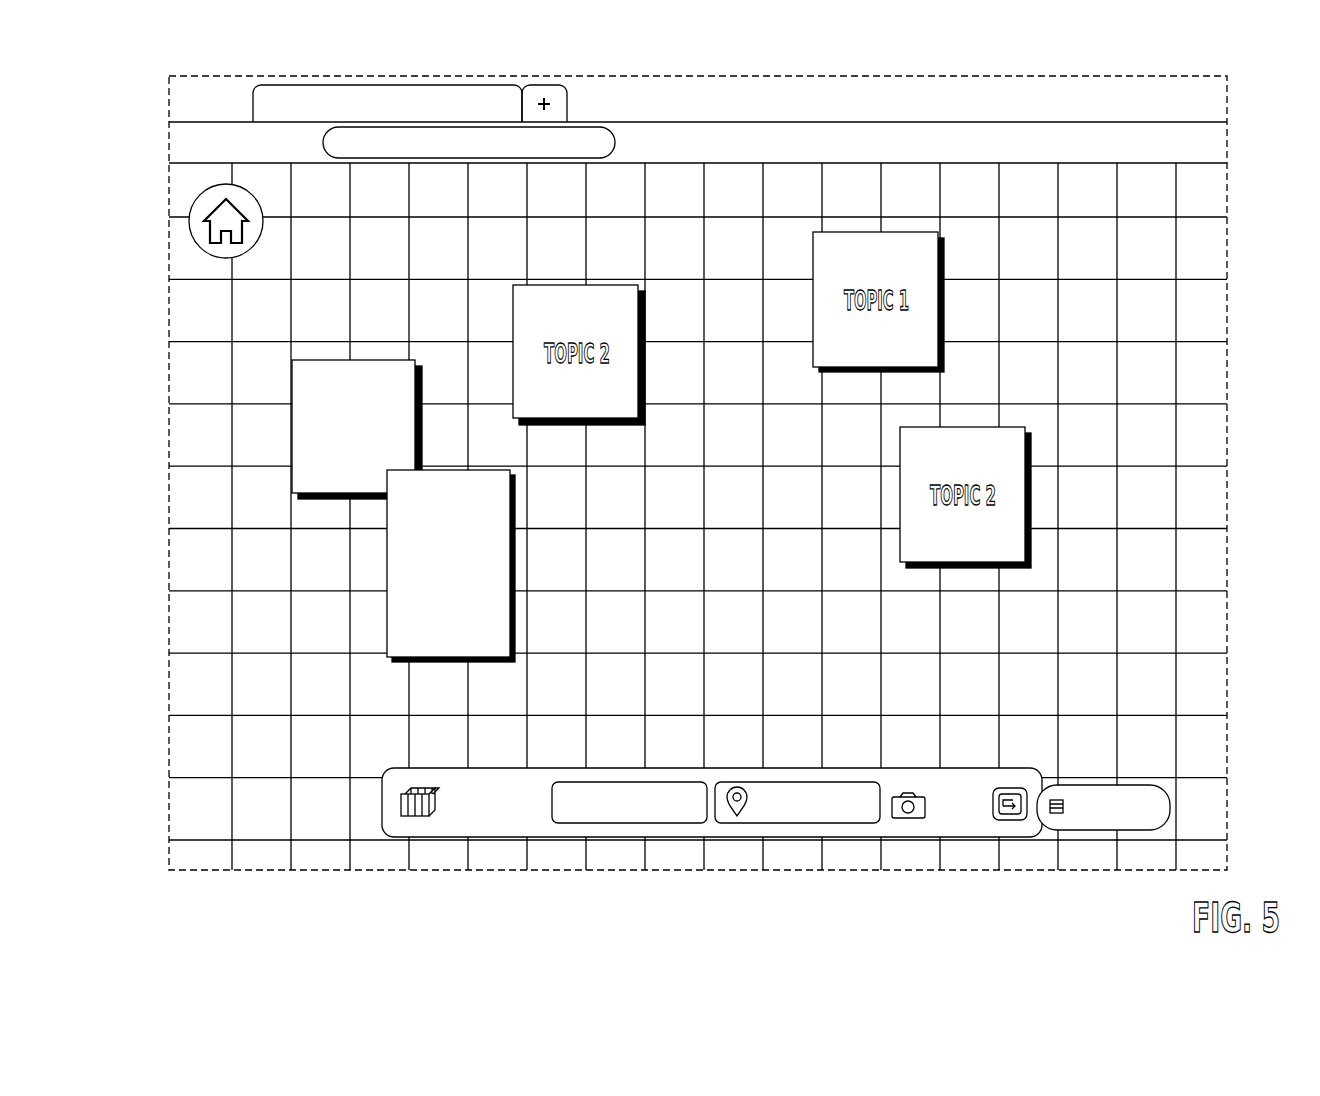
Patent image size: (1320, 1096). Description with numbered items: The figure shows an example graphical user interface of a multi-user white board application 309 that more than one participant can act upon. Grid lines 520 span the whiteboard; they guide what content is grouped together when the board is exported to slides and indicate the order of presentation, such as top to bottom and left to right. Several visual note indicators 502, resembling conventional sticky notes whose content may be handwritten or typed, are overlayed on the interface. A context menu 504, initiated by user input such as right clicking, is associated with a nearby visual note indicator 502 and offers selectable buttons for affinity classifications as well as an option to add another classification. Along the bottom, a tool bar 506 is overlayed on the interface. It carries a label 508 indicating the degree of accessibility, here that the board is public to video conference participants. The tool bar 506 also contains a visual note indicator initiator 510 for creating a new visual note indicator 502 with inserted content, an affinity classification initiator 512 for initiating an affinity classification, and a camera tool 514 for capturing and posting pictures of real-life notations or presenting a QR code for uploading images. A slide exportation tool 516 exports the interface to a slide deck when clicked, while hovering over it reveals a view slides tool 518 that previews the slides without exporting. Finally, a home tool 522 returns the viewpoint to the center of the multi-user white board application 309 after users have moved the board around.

The multi-user white board application 309 is at (563, 157).
The visual note indicator 502 is at (292, 457).
The context menu 504 is at (387, 635).
The tool bar 506 is at (388, 824).
The label 508 is at (463, 832).
The visual note indicator initiator 510 is at (583, 824).
The affinity classification initiator 512 is at (748, 830).
The camera tool 514 is at (897, 820).
The slide exportation tool 516 is at (988, 812).
The view slides tool 518 is at (1077, 828).
The grid lines 520 is at (714, 278).
The home tool 522 is at (222, 183).